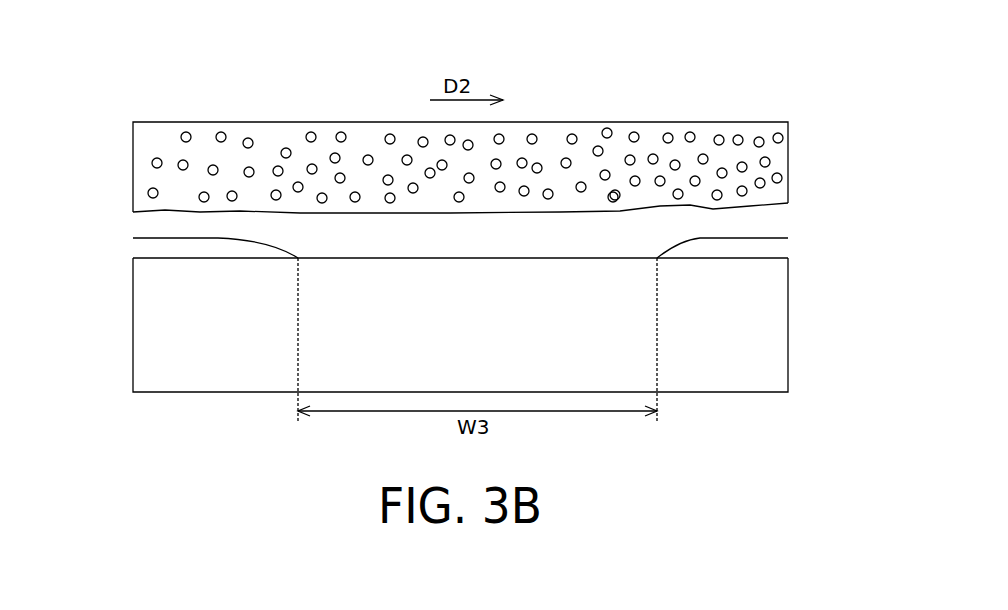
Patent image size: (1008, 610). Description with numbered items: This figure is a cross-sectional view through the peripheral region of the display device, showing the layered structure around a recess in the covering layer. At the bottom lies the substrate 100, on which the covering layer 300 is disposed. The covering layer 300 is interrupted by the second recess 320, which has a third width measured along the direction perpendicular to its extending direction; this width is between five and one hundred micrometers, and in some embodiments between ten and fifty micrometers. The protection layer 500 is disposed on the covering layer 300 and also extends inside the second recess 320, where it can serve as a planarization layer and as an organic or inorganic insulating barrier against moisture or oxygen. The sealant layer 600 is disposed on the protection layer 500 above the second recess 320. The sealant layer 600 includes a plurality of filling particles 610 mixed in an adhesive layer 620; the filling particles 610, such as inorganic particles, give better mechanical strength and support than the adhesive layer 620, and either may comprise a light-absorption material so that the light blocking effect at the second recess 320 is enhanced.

The substrate 100 is at (790, 352).
The covering layer 300 is at (128, 246).
The second recess 320 is at (379, 247).
The protection layer 500 is at (790, 217).
The sealant layer 600 is at (82, 125).
The filling particles 610 is at (154, 159).
The adhesive layer 620 is at (140, 182).